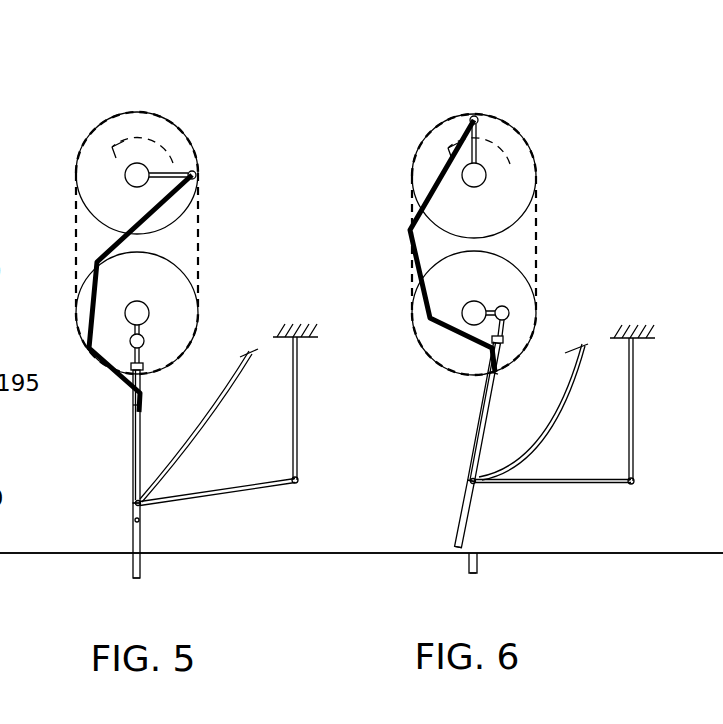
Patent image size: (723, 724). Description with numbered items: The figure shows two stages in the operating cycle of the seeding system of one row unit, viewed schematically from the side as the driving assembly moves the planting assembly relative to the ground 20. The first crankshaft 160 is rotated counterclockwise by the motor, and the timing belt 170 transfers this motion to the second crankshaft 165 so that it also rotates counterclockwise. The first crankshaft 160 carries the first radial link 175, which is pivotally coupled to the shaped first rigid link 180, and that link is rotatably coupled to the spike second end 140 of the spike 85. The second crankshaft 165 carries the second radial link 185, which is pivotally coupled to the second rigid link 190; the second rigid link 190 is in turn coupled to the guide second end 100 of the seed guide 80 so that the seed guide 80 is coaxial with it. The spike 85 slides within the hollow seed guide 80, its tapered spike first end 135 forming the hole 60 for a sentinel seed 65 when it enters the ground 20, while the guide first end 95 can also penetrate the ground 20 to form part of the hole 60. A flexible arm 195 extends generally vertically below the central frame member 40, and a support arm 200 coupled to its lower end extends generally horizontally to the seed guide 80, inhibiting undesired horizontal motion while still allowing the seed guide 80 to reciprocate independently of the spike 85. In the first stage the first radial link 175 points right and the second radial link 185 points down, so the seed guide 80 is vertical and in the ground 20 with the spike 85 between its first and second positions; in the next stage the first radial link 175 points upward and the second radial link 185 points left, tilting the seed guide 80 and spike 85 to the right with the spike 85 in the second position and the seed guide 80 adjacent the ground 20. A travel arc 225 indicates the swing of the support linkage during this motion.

In FIG. 5, the ground 20 is at (298, 553).
In FIG. 6, the ground 20 is at (655, 553).
In FIG. 5, the central frame member 40 is at (310, 332).
In FIG. 6, the central frame member 40 is at (634, 333).
In FIG. 6, the hole 60 is at (478, 570).
In FIG. 5, the sentinel seed 65 is at (140, 520).
In FIG. 6, the sentinel seed 65 is at (468, 574).
In FIG. 5, the seed guide 80 is at (133, 542).
In FIG. 6, the seed guide 80 is at (469, 515).
In FIG. 5, the spike 85 is at (133, 462).
In FIG. 6, the spike 85 is at (474, 421).
In FIG. 5, the guide first end 95 is at (137, 580).
In FIG. 6, the guide first end 95 is at (455, 548).
In FIG. 5, the guide second end 100 is at (145, 367).
In FIG. 6, the guide second end 100 is at (505, 341).
In FIG. 5, the spike first end 135 is at (133, 503).
In FIG. 6, the spike first end 135 is at (471, 451).
In FIG. 5, the spike second end 140 is at (133, 414).
In FIG. 6, the spike second end 140 is at (460, 373).
In FIG. 5, the first crankshaft 160 is at (133, 172).
In FIG. 6, the first crankshaft 160 is at (480, 176).
In FIG. 5, the second crankshaft 165 is at (140, 310).
In FIG. 6, the second crankshaft 165 is at (474, 306).
In FIG. 5, the timing belt 170 is at (200, 212).
In FIG. 6, the timing belt 170 is at (538, 213).
In FIG. 5, the first radial link 175 is at (186, 175).
In FIG. 6, the first radial link 175 is at (504, 144).
In FIG. 5, the first rigid link 180 is at (102, 250).
In FIG. 6, the first rigid link 180 is at (430, 190).
In FIG. 5, the second radial link 185 is at (141, 329).
In FIG. 6, the second radial link 185 is at (487, 307).
In FIG. 5, the second rigid link 190 is at (142, 356).
In FIG. 6, the second rigid link 190 is at (504, 330).
In FIG. 5, the flexible arm 195 is at (298, 431).
In FIG. 6, the flexible arm 195 is at (634, 431).
In FIG. 5, the support arm 200 is at (233, 491).
In FIG. 6, the support arm 200 is at (550, 480).
In FIG. 5, the travel arc 225 is at (230, 391).
In FIG. 6, the travel arc 225 is at (562, 391).